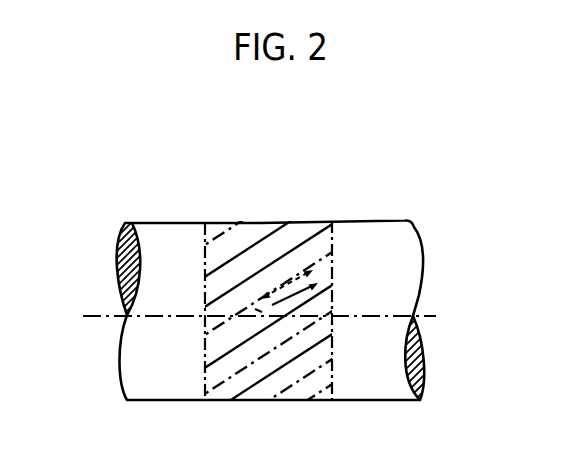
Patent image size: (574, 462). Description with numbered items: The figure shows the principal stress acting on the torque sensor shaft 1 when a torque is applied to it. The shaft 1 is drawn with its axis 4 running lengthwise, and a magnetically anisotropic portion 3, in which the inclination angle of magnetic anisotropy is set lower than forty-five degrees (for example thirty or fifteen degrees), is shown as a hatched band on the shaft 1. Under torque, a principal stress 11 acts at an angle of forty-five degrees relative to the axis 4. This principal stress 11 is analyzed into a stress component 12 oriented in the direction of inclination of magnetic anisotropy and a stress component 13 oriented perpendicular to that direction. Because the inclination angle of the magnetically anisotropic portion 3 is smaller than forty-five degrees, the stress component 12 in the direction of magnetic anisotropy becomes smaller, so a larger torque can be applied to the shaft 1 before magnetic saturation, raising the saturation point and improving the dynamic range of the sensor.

The torque sensor shaft 1 is at (361, 231).
The magnetically anisotropic portion 3 is at (217, 224).
The axis 4 is at (102, 317).
The principal stress 11 is at (292, 283).
The stress component 12 is at (307, 313).
The stress component 13 is at (260, 312).